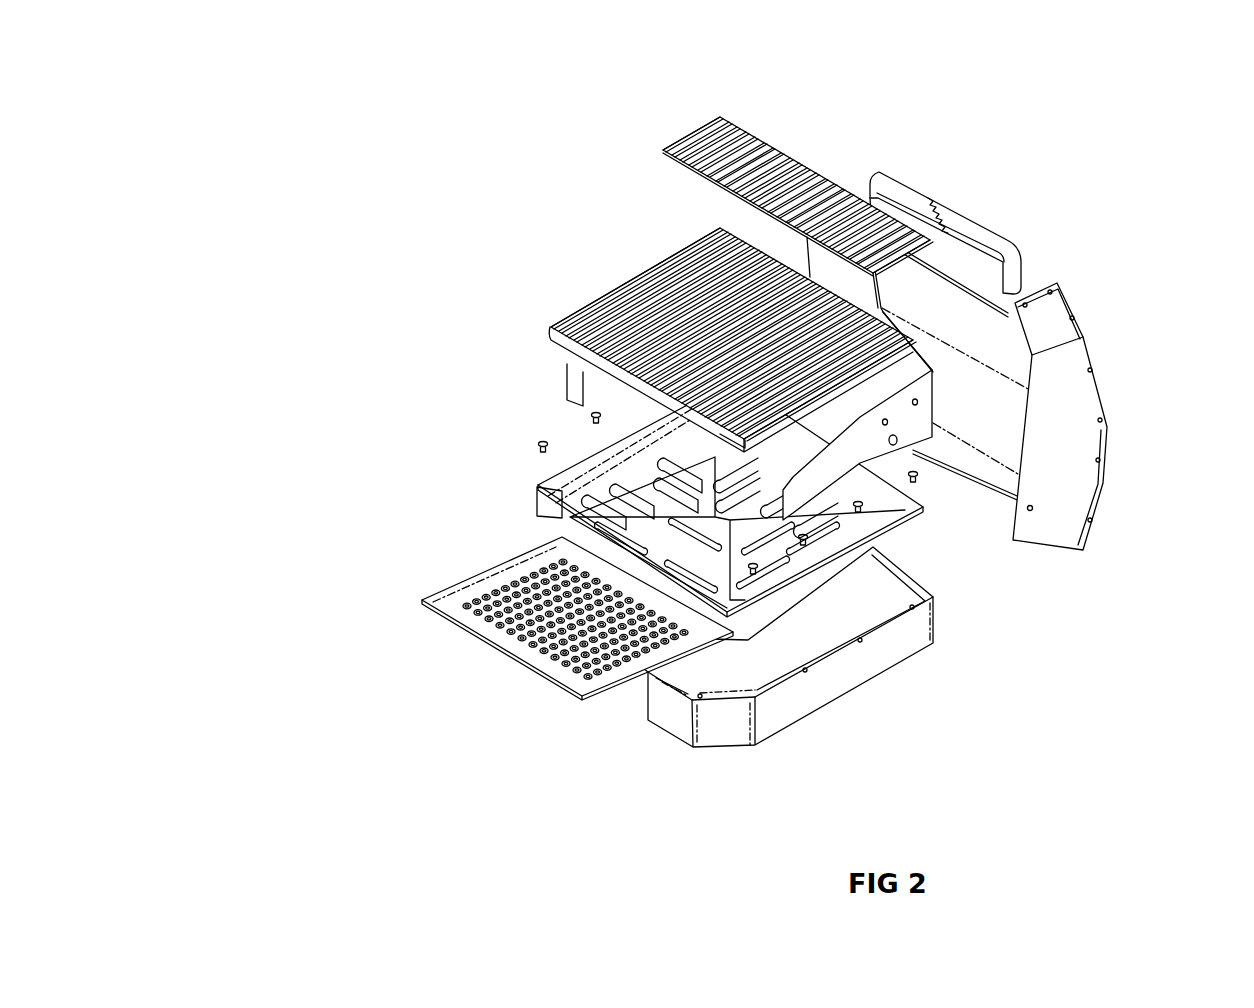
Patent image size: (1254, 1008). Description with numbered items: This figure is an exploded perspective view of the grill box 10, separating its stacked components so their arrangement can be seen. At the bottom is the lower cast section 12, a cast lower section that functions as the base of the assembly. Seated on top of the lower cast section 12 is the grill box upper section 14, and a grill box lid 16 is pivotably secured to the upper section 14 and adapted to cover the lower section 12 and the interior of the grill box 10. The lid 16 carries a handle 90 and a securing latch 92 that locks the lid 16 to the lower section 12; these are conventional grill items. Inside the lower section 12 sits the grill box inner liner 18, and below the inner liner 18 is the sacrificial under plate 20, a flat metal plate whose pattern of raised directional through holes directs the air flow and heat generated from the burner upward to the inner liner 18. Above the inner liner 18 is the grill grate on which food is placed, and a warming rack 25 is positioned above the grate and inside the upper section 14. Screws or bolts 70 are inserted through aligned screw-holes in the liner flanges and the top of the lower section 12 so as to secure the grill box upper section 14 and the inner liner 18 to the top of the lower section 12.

The grill box 10 is at (748, 820).
The lower cast section 12 is at (825, 675).
The grill box upper section 14 is at (903, 413).
The grill box lid 16 is at (1068, 383).
The grill box inner liner 18 is at (533, 447).
The sacrificial under plate 20 is at (607, 292).
The warming rack 25 is at (663, 150).
The screws or bolts 70 is at (917, 480).
The handle 90 is at (983, 233).
The securing latch 92 is at (867, 190).